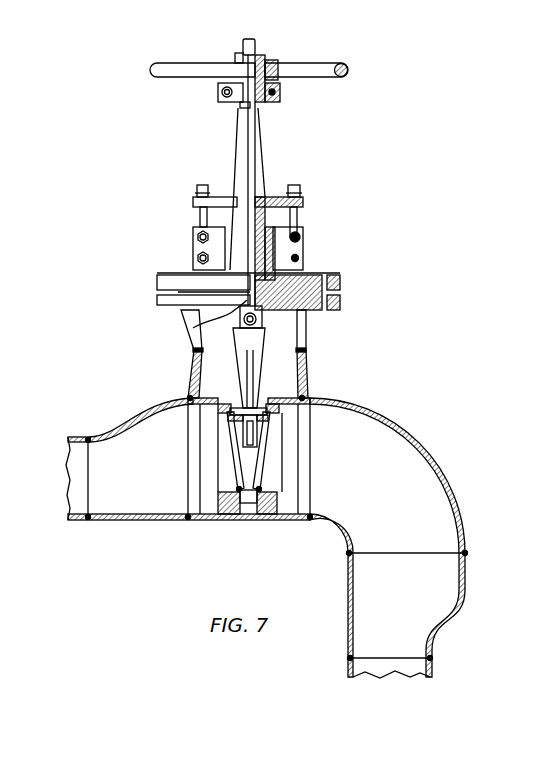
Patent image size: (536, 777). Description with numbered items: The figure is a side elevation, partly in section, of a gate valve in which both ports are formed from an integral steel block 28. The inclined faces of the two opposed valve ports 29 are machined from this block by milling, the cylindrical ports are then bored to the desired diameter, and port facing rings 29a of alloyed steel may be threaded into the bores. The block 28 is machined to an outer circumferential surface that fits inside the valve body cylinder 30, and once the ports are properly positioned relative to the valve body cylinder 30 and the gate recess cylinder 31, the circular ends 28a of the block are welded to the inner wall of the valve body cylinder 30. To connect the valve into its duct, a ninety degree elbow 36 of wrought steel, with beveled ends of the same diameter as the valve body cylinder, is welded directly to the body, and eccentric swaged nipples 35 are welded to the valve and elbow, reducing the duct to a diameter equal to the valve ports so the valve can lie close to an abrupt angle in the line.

The integral steel block 28 is at (270, 505).
The circular ends 28a is at (197, 442).
The opposed valve ports 29 is at (255, 402).
The port facing rings 29a is at (240, 468).
The valve body cylinder 30 is at (220, 520).
The gate recess cylinder 31 is at (307, 373).
The eccentric swaged nipples 35 is at (121, 400).
The 90° elbows 36 is at (452, 478).